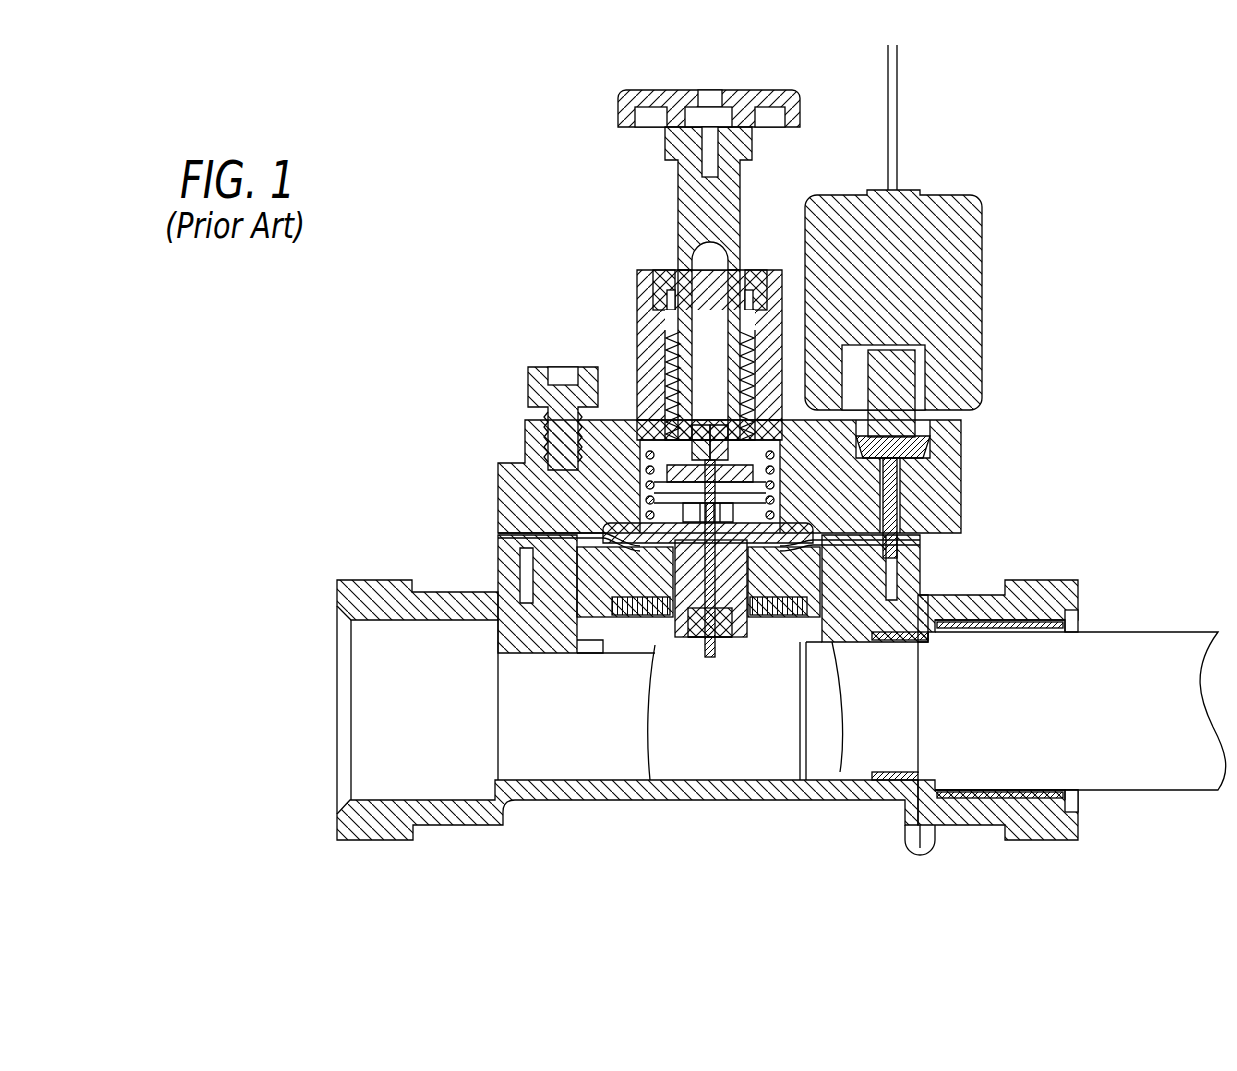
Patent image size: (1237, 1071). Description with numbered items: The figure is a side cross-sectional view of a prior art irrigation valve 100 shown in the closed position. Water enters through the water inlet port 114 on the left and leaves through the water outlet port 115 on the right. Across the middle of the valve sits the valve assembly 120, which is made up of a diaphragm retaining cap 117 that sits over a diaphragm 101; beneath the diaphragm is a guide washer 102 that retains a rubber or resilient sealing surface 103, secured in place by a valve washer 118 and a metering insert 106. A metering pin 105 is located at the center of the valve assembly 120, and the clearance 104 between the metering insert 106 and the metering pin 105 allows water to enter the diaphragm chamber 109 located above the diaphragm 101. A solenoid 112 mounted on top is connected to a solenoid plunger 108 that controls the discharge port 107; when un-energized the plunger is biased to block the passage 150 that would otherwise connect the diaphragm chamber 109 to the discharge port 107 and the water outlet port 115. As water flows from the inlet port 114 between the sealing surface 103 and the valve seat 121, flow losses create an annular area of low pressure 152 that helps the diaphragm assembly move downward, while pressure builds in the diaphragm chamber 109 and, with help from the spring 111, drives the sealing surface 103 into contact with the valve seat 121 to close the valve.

The irrigation valve 100 is at (483, 332).
The diaphragm 101 is at (508, 528).
The guide washer 102 is at (805, 567).
The sealing surface 103 is at (628, 613).
The clearance 104 is at (697, 660).
The metering pin 105 is at (722, 642).
The metering insert 106 is at (800, 628).
The discharge port 107 is at (893, 492).
The solenoid plunger 108 is at (898, 394).
The diaphragm chamber 109 is at (637, 507).
The spring 111 is at (637, 477).
The solenoid 112 is at (985, 216).
The water inlet port 114 is at (337, 722).
The water outlet port 115 is at (1078, 800).
The diaphragm retaining cap 117 is at (600, 517).
The valve washer 118 is at (662, 614).
The valve assembly 120 is at (582, 588).
The valve seat 121 is at (792, 612).
The passage 150 is at (864, 447).
The annular area of low pressure 152 is at (830, 623).